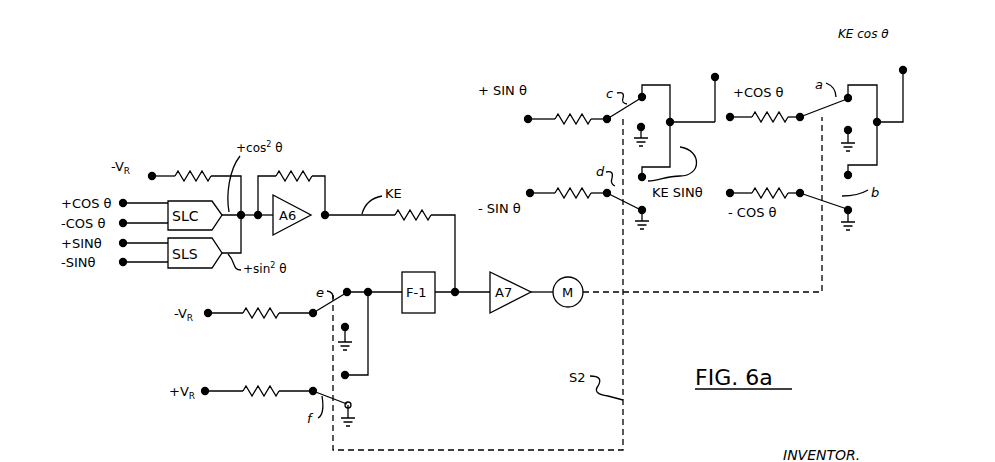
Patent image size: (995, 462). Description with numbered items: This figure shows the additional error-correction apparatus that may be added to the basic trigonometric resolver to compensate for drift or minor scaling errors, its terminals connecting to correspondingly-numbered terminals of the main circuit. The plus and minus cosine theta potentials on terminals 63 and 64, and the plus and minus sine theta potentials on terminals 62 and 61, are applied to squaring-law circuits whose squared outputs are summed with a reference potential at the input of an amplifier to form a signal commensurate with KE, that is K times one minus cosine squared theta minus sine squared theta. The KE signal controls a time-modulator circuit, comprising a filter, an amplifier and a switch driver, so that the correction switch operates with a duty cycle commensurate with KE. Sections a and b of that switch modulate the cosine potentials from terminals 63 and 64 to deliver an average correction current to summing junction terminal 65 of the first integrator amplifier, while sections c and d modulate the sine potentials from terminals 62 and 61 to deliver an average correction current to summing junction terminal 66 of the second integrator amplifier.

The terminal 61 is at (123, 263).
The terminal 62 is at (123, 243).
The terminal 63 is at (123, 203).
The integrator output terminal 64 is at (123, 223).
The summing junction terminal 65 is at (902, 70).
The summing junction terminal 66 is at (715, 76).